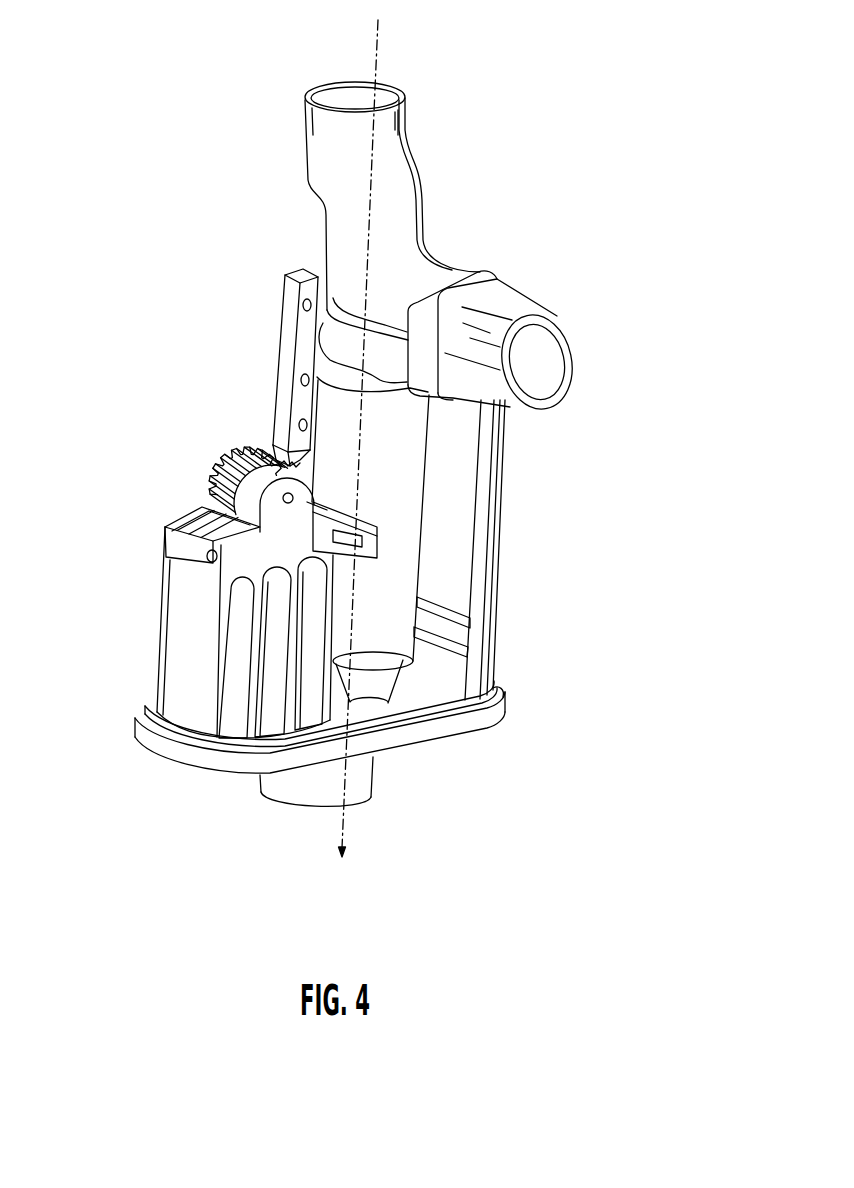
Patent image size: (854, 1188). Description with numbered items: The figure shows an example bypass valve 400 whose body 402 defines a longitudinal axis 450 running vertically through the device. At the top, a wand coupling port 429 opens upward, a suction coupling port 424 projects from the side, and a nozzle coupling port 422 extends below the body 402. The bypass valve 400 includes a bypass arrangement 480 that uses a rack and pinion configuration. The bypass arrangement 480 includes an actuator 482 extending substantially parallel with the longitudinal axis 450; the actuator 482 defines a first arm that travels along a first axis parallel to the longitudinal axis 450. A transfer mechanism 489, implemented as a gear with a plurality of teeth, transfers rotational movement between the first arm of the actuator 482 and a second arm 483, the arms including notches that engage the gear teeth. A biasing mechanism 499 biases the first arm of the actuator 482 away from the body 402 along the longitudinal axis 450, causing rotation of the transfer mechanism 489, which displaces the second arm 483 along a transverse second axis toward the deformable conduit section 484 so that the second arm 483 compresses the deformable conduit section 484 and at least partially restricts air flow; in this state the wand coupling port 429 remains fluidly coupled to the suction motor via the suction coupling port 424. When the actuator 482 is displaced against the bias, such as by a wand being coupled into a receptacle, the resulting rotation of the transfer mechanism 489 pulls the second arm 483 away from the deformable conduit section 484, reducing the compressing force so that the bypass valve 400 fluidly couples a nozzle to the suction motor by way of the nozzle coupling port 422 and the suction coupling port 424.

The bypass valve 400 is at (192, 197).
The longitudinal axis 450 is at (385, 47).
The wand coupling port 429 is at (398, 95).
The suction coupling port 424 is at (548, 369).
The deformable conduit section 484 is at (436, 525).
The bypass arrangement 480 is at (217, 398).
The actuator 482 is at (275, 340).
The transfer mechanism 489 is at (217, 484).
The biasing mechanism 499 is at (325, 463).
The second arm 483 is at (182, 545).
The body 402 is at (487, 722).
The nozzle coupling port 422 is at (302, 817).